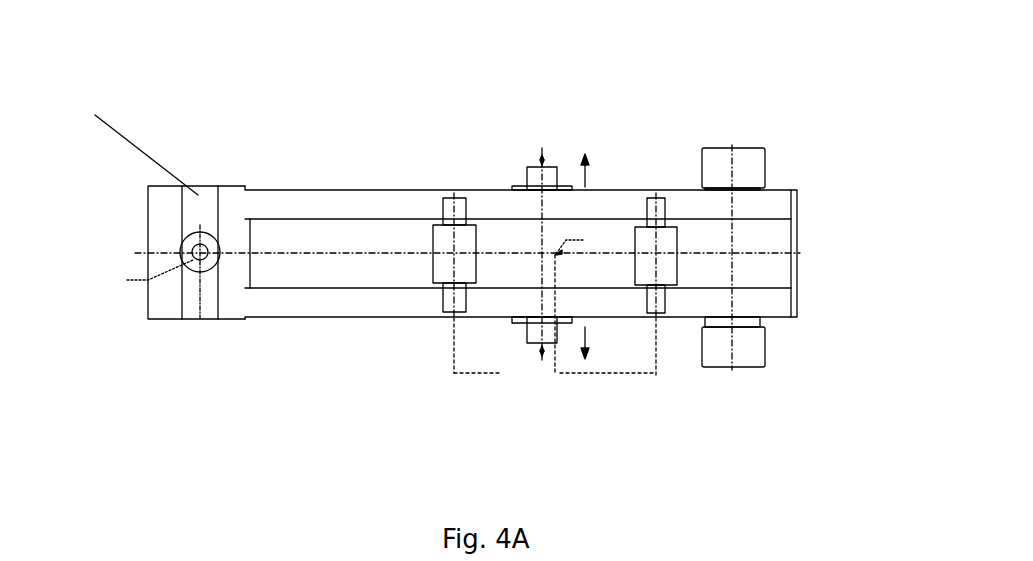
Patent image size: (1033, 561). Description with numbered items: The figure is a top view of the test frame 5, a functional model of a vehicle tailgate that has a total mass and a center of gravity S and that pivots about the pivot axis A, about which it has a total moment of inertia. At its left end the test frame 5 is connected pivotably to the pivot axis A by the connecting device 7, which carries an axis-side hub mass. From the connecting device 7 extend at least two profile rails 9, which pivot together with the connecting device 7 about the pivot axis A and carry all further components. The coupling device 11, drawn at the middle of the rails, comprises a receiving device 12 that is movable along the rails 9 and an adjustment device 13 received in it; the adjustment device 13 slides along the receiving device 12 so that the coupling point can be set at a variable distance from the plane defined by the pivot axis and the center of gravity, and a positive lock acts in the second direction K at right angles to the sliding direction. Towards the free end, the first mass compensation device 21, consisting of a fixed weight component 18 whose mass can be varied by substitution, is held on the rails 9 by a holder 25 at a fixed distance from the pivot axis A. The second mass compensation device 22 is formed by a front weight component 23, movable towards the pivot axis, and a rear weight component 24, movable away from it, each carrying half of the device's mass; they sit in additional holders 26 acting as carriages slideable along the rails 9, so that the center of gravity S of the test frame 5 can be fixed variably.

The test frame 5 is at (196, 83).
The connecting device 7 is at (167, 242).
The rails 9 is at (695, 307).
The coupling device 11 is at (467, 258).
The receiving device 12 is at (523, 185).
The adjustment device 13 is at (532, 173).
The weight component 18 is at (733, 257).
The first mass compensation device 21 is at (740, 170).
The second mass compensation device 22 is at (484, 266).
The front weight component 23 is at (465, 272).
The rear weight component 24 is at (647, 253).
The holder 25 is at (743, 193).
The additional holder 26 is at (457, 215).